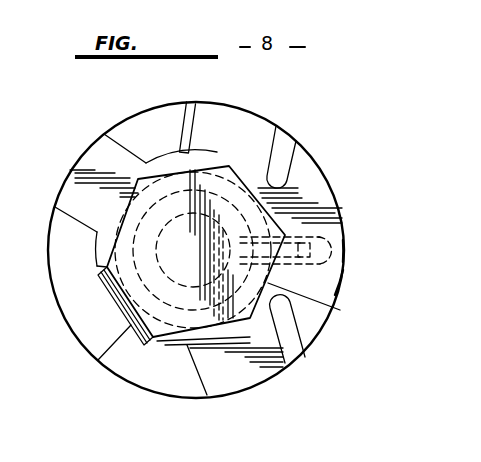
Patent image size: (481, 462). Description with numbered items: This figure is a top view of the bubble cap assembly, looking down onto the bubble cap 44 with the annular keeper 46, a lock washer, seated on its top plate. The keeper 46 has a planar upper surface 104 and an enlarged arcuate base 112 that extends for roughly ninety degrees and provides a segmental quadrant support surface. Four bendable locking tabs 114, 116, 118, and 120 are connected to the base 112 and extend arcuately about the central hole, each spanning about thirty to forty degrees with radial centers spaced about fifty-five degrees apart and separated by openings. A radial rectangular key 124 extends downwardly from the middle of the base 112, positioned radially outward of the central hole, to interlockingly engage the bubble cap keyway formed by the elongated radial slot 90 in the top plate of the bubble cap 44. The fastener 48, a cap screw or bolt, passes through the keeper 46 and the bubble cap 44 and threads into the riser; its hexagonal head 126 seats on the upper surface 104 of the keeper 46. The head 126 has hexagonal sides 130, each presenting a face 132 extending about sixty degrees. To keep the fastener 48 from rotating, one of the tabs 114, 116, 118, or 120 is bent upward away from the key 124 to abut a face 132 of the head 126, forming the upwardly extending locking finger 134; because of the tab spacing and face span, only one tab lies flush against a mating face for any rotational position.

The bubble cap 44 is at (143, 391).
The annular keeper 46 is at (188, 105).
The fastener 48 is at (216, 325).
The radial slot 90 is at (345, 252).
The upper surface 104 is at (305, 213).
The arcuate base 112 is at (340, 283).
The locking tab 114 is at (270, 97).
The locking tab 116 is at (74, 168).
The locking tab 118 is at (102, 292).
The locking tab 120 is at (280, 372).
The rectangular key 124 is at (343, 235).
The hexagonal head 126 is at (323, 308).
The hexagonal sides 130 is at (167, 174).
The face 132 is at (193, 249).
The locking finger 134 is at (98, 360).